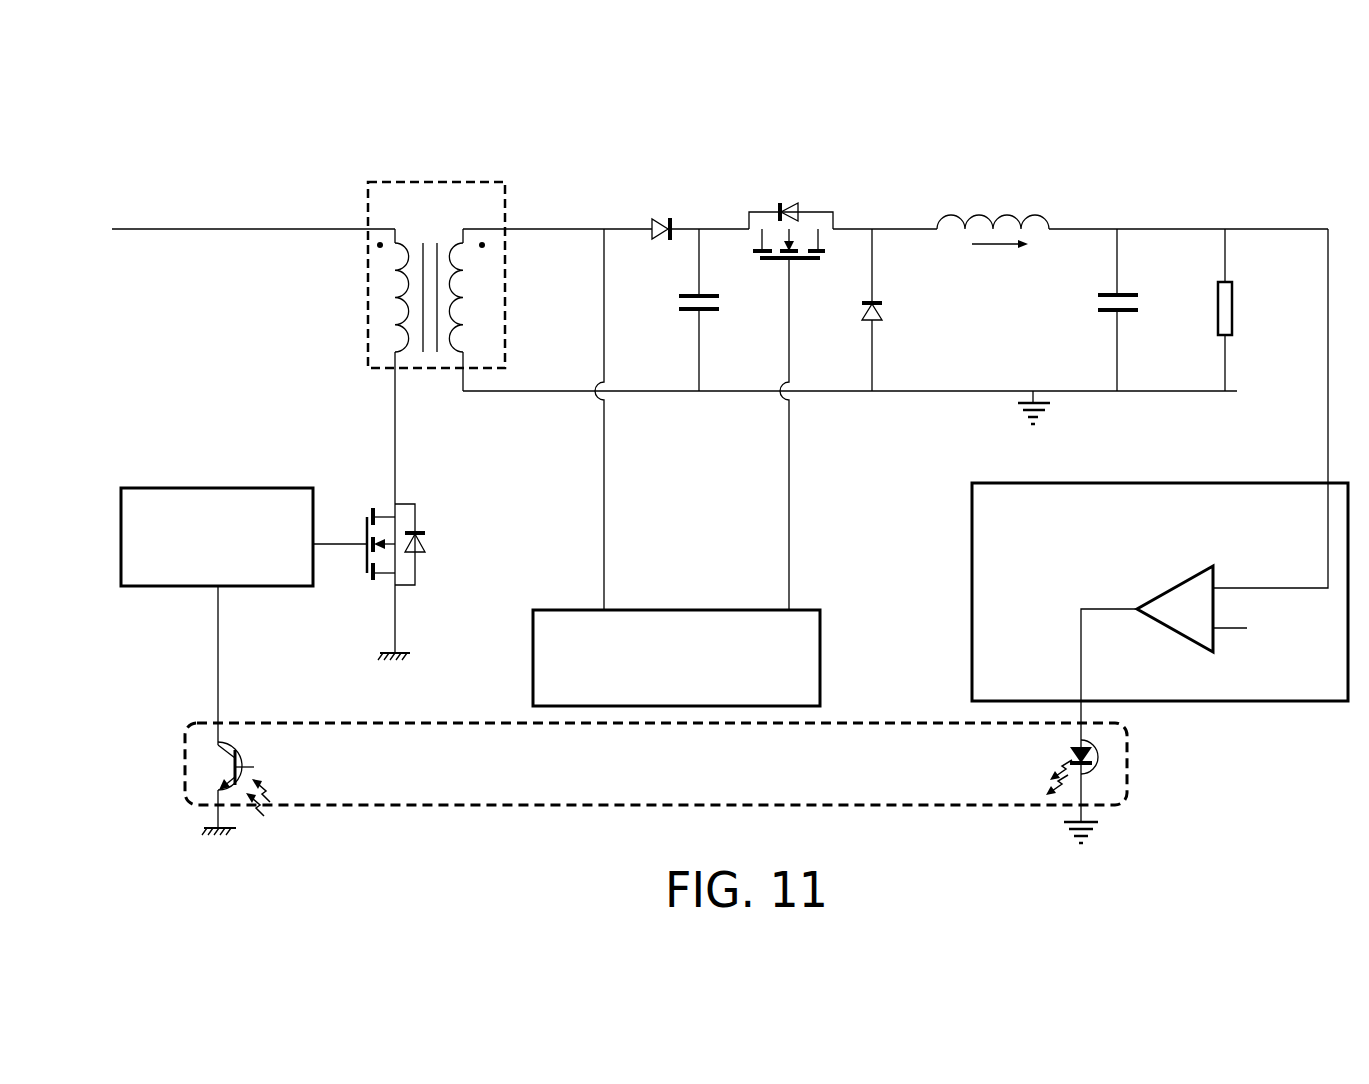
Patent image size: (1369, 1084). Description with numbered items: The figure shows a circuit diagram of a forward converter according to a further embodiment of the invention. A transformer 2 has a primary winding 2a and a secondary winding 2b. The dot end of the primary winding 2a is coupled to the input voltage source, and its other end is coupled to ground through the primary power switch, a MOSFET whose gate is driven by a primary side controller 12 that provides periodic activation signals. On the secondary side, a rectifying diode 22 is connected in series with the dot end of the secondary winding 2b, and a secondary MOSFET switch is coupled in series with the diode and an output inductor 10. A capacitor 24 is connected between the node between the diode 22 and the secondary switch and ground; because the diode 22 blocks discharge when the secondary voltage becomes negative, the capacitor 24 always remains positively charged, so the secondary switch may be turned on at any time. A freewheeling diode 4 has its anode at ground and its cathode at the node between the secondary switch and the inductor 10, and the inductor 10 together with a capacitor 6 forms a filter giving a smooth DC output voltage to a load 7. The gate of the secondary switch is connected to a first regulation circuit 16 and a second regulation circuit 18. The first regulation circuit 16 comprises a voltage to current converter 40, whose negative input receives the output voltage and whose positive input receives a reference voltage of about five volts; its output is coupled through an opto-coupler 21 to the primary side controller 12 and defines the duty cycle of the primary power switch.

The output inductor 10 is at (155, 232).
The transformer 2 is at (430, 182).
The primary winding 2a is at (403, 243).
The secondary winding 2b is at (456, 243).
The rectifying diode 22 is at (660, 221).
The capacitor 24 is at (715, 312).
The freewheeling diode 4 is at (882, 310).
The capacitor 6 is at (1105, 312).
The load 7 is at (1215, 302).
The primary side controller 12 is at (217, 487).
The second regulation circuit 18 is at (533, 697).
The first regulation circuit 16 is at (1157, 483).
The voltage to current converter 40 is at (1172, 630).
The opto-coupler 21 is at (1128, 778).